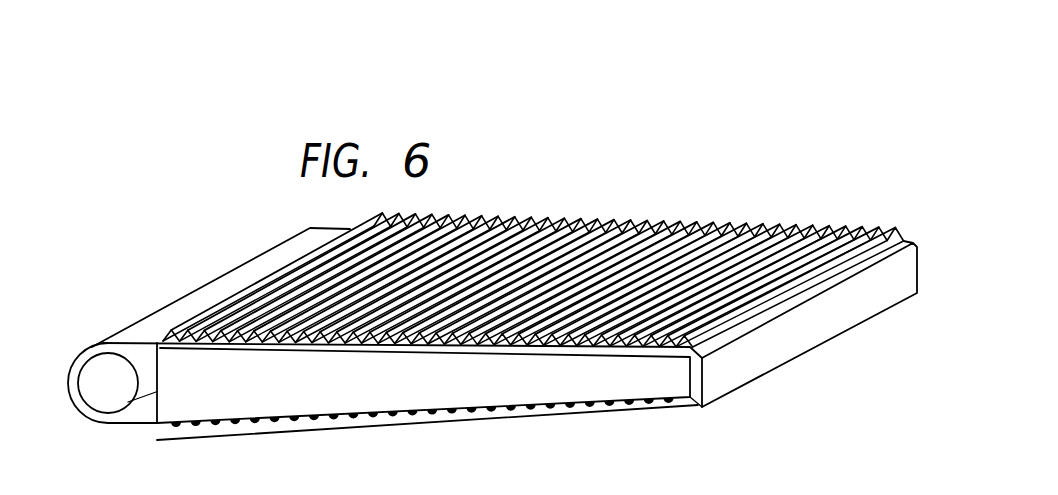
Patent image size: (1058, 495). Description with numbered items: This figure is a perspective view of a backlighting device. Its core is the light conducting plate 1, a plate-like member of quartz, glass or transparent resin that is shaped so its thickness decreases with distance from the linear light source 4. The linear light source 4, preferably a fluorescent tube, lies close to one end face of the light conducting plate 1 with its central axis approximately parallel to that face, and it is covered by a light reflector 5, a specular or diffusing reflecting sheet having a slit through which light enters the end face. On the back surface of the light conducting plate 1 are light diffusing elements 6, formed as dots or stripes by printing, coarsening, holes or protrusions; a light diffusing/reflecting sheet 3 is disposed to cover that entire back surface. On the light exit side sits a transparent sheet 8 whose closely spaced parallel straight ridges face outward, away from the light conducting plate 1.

The light conducting plate 1 is at (573, 385).
The light diffusing/reflecting sheet 3 is at (437, 423).
The linear light source 4 is at (88, 384).
The light reflector 5 is at (103, 426).
The light diffusing elements 6 is at (257, 420).
The transparent sheet 8 is at (167, 334).